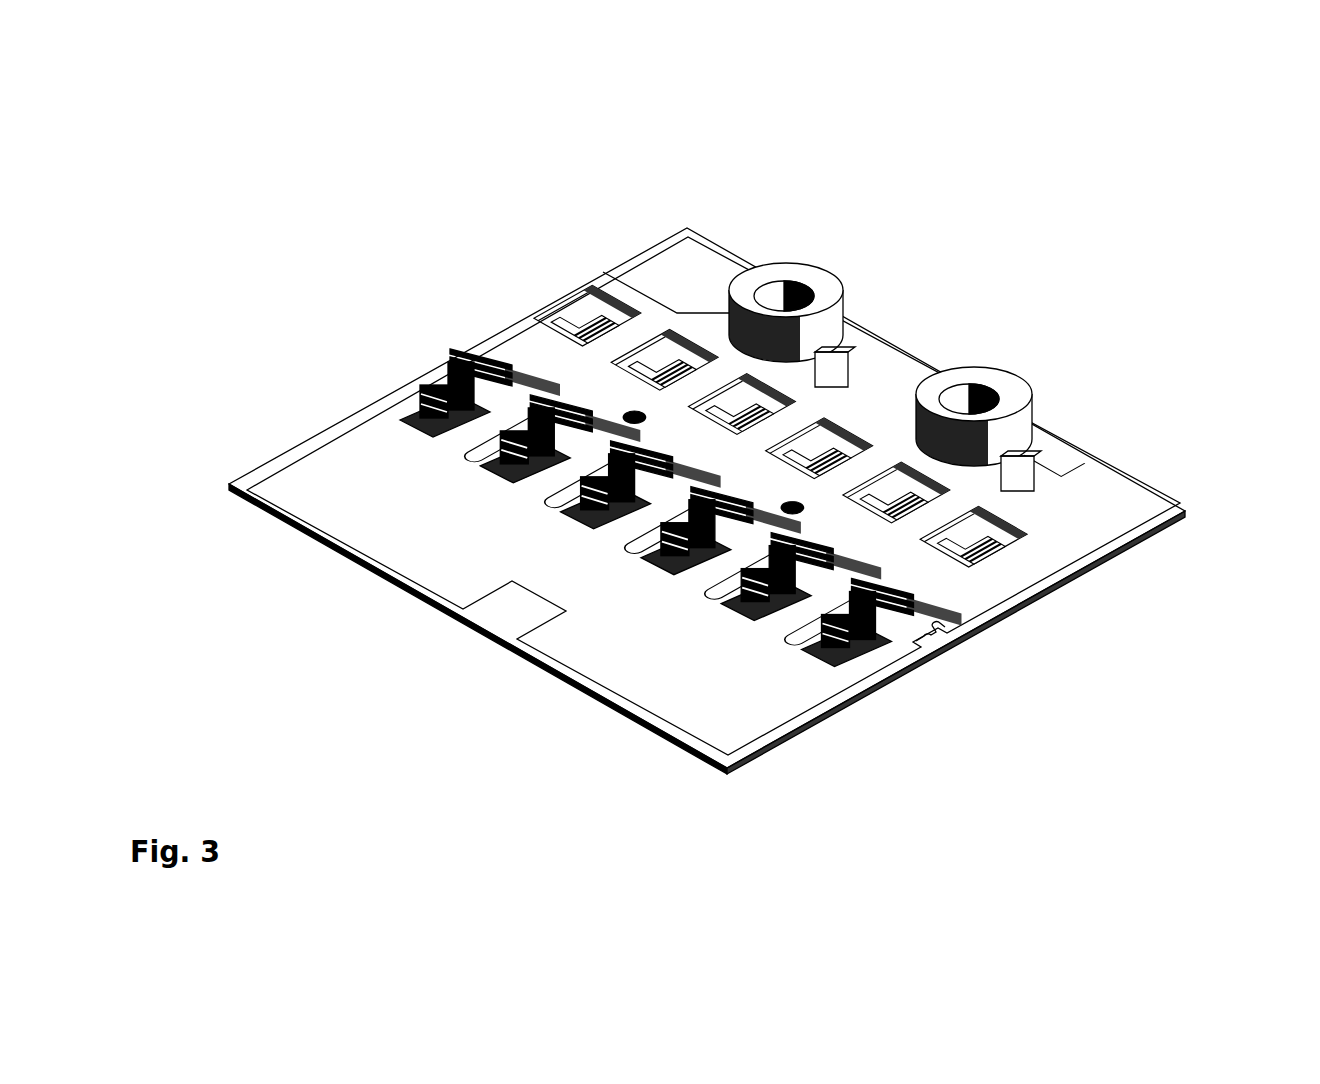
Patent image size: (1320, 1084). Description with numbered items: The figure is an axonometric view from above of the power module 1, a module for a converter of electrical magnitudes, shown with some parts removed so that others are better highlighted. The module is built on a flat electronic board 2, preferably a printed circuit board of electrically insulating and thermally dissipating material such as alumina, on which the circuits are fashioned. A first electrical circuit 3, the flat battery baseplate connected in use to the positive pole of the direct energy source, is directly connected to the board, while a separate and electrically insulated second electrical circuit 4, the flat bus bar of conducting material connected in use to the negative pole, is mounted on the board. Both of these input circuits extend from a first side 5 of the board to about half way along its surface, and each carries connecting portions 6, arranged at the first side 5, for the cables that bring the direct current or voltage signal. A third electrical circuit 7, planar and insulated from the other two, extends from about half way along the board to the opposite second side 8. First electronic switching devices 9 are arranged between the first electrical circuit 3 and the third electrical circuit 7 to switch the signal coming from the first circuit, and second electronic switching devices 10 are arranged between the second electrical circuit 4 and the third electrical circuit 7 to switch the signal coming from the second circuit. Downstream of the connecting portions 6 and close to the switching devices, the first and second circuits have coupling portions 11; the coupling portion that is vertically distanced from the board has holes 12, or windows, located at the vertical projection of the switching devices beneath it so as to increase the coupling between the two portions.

The power module 1 is at (287, 183).
The electronic board 2 is at (762, 748).
The first electrical circuit 3 is at (1128, 480).
The second electrical circuit 4 is at (1047, 430).
The first side 5 is at (873, 328).
The connecting portions 6 is at (903, 377).
The third electrical circuit 7 is at (314, 476).
The second side 8 is at (465, 633).
The first electronic switching devices 9 is at (570, 325).
The second electronic switching devices 10 is at (440, 365).
The coupling portions 11 is at (503, 322).
The holes 12 is at (607, 312).